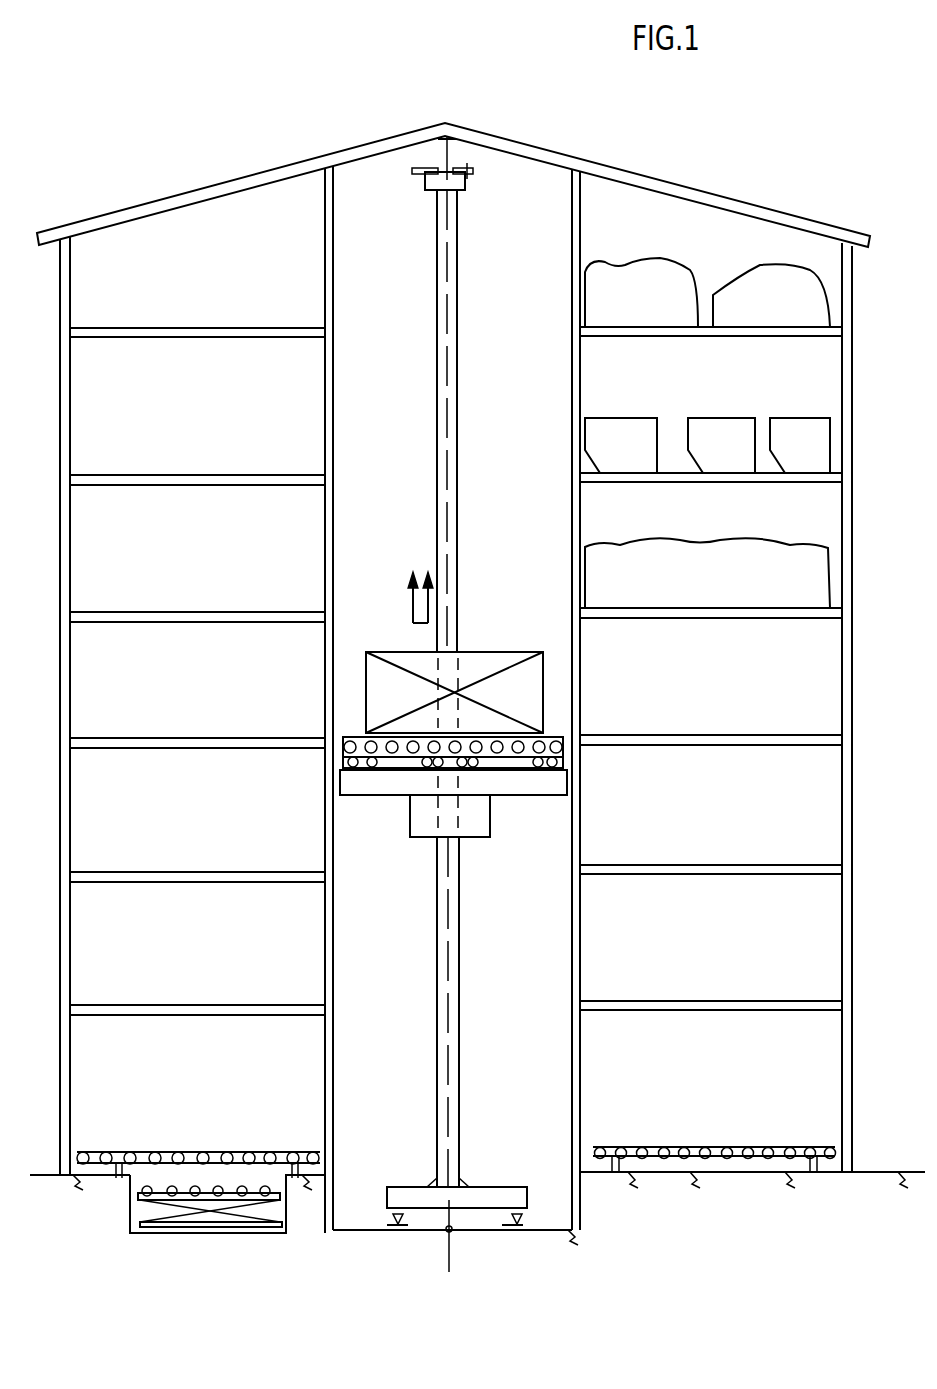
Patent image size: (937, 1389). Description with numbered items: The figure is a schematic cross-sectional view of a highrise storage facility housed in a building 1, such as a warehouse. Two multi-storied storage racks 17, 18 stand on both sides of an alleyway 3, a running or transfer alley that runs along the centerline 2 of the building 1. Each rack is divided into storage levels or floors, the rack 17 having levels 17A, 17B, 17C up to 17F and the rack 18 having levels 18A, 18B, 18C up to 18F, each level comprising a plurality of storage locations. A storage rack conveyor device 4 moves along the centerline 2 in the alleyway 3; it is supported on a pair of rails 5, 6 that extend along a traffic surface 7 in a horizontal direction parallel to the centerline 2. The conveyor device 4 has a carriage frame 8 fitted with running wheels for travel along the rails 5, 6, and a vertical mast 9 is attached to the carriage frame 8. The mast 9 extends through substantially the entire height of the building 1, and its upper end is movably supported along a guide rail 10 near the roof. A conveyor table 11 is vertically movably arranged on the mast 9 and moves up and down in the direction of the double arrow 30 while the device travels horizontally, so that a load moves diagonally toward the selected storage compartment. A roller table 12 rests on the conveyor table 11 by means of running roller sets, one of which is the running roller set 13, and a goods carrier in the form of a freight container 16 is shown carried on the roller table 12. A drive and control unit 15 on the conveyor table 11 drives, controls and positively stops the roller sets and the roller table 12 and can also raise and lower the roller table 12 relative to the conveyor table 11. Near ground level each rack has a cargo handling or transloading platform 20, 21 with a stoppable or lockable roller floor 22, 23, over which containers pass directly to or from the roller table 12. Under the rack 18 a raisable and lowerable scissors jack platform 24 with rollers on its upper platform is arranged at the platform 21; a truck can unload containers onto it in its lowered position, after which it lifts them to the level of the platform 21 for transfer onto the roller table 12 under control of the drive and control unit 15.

The building 1 is at (632, 146).
The centerline 2 is at (448, 1232).
The alleyway 3 is at (515, 175).
The storage rack conveyor device 4 is at (480, 659).
The rail 5 is at (395, 1224).
The rail 6 is at (521, 1228).
The traffic surface 7 is at (555, 1232).
The carriage frame 8 is at (492, 1190).
The vertical mast 9 is at (456, 326).
The guide rail 10 is at (440, 176).
The conveyor table 11 is at (507, 786).
The roller table 12 is at (563, 741).
The running roller set 13 is at (356, 772).
The drive and control unit 15 is at (473, 828).
The freight container 16 is at (481, 665).
The storage rack 17 is at (735, 634).
The storage level 17F is at (613, 330).
The storage level 17C is at (660, 741).
The storage level 17B is at (674, 868).
The storage level 17A is at (674, 1006).
The storage rack 18 is at (197, 653).
The storage level 18F is at (181, 330).
The storage level 18C is at (184, 741).
The storage level 18B is at (188, 875).
The storage level 18A is at (191, 1008).
The cargo handling platform 20 is at (714, 1140).
The cargo handling platform 21 is at (198, 1145).
The roller floor 22 is at (642, 1147).
The roller floor 23 is at (130, 1153).
The scissors jack platform 24 is at (158, 1234).
The double arrow 30 is at (413, 613).